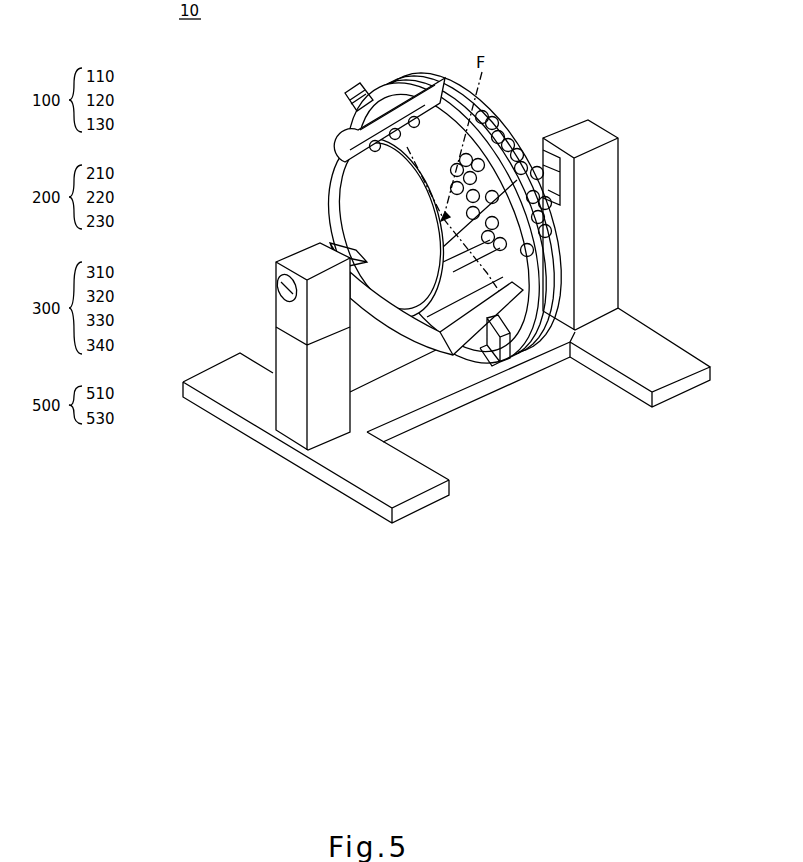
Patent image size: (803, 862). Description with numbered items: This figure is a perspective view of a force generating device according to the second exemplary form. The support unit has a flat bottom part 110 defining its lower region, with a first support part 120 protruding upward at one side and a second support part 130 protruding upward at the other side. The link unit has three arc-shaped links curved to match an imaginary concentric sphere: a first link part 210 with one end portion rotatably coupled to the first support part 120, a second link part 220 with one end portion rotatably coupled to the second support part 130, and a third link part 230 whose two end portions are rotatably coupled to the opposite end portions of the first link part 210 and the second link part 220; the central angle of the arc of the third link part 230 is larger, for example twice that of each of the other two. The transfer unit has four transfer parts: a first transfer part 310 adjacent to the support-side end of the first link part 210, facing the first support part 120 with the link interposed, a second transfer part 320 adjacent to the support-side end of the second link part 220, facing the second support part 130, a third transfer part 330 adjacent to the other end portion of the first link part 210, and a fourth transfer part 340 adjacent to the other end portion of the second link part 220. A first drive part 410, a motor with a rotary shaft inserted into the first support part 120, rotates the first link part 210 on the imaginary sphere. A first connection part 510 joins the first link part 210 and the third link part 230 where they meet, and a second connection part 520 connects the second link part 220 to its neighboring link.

The bottom part 110 is at (385, 408).
The first support part 120 is at (293, 412).
The second support part 130 is at (604, 262).
The first link part 210 is at (455, 340).
The second link part 220 is at (443, 240).
The third link part 230 is at (528, 338).
The first transfer part 310 is at (343, 196).
The second transfer part 320 is at (548, 200).
The third transfer part 330 is at (503, 300).
The fourth transfer part 340 is at (365, 137).
The first drive part 410 is at (279, 289).
The first connection part 510 is at (507, 368).
The second connection part 520 is at (352, 90).